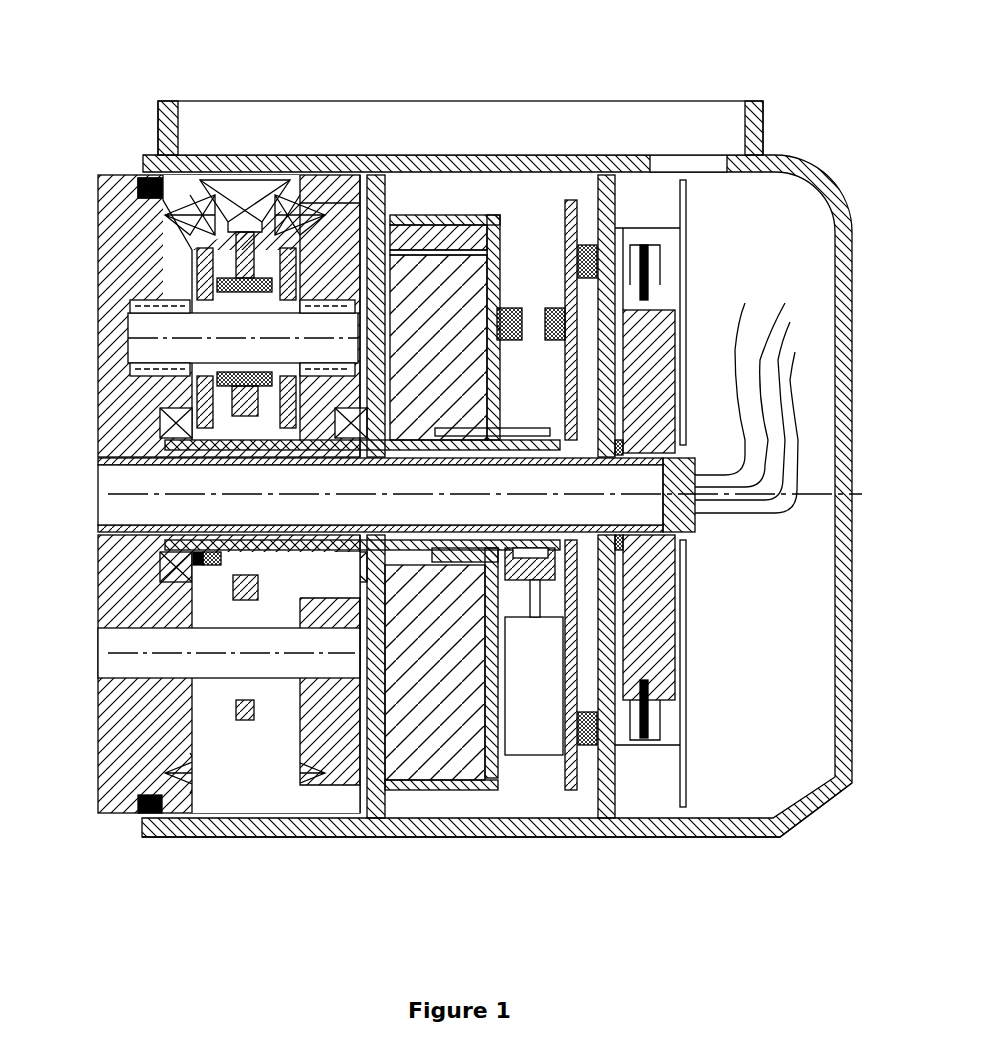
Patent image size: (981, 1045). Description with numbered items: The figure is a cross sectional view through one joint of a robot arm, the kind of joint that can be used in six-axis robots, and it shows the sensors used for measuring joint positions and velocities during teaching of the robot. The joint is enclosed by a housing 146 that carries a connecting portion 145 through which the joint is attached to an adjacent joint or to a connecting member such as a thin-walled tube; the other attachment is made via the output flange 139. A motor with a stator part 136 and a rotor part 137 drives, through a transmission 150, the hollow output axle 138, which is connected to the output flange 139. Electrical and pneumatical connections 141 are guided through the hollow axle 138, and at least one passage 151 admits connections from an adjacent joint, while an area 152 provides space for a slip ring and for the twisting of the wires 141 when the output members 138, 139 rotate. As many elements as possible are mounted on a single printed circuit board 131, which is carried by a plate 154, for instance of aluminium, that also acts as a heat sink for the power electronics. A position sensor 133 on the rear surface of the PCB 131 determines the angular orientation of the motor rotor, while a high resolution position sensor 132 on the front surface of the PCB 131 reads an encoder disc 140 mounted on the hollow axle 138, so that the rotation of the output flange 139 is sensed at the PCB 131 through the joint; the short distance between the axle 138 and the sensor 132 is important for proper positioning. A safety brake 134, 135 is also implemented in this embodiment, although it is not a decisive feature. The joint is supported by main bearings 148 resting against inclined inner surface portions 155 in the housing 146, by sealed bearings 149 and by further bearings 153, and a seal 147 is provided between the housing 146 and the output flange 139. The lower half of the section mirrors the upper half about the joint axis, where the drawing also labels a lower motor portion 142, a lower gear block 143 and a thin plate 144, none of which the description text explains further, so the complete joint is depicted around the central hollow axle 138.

The printed circuit board 131 is at (565, 205).
The position sensor 132 is at (686, 250).
The position sensor 133 is at (555, 310).
The safety brake 134 is at (540, 740).
The safety brake 135 is at (610, 590).
The stator part 136 is at (420, 240).
The rotor part 137 is at (490, 225).
The output axle 138 is at (105, 522).
The output flange 139 is at (110, 410).
The encoder disc 140 is at (650, 300).
The electrical and pneumatical connections 141 is at (790, 412).
The lower motor 142 is at (590, 650).
The lower gear housing block 143 is at (235, 545).
The plate 144 is at (520, 440).
The connecting portion 145 is at (763, 130).
The housing 146 is at (853, 248).
The seal 147 is at (150, 180).
The main bearings 148 is at (200, 200).
The sealed bearings 149 is at (175, 440).
The transmission 150 is at (140, 330).
The passage 151 is at (690, 165).
The area for slip ring 152 is at (760, 770).
The further bearings 153 is at (623, 447).
The plate 154 is at (607, 780).
The inclined inner surface portions 155 is at (240, 225).